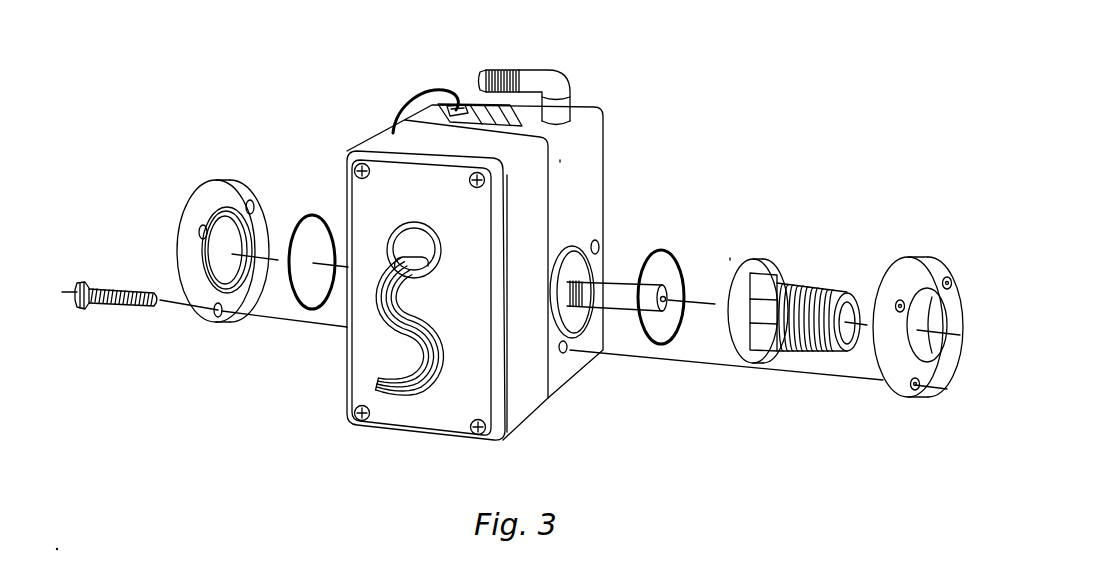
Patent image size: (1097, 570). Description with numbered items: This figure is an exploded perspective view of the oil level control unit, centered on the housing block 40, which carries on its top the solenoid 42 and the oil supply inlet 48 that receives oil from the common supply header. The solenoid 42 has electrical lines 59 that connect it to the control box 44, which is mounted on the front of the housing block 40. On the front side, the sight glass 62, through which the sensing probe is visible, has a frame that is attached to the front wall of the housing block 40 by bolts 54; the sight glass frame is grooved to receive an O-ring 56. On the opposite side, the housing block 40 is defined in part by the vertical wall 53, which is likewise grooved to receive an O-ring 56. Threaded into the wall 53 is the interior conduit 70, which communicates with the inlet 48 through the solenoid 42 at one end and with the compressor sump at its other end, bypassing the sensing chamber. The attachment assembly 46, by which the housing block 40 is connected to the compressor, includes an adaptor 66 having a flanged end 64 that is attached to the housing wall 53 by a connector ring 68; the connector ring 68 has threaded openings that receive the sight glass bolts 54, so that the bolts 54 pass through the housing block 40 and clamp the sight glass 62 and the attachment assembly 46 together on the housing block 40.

The housing block 40 is at (607, 198).
The solenoid 42 is at (460, 90).
The control box 44 is at (350, 343).
The attachment assembly 46 is at (846, 209).
The inlet 48 is at (503, 63).
The vertical wall 53 is at (588, 151).
The bolts 54 is at (148, 313).
The O-ring 56 is at (325, 183).
The electrical lines 59 is at (420, 104).
The sight glass 62 is at (246, 186).
The flanged end 64 is at (755, 258).
The adaptor 66 is at (812, 281).
The connector ring 68 is at (950, 275).
The interior conduit 70 is at (615, 309).